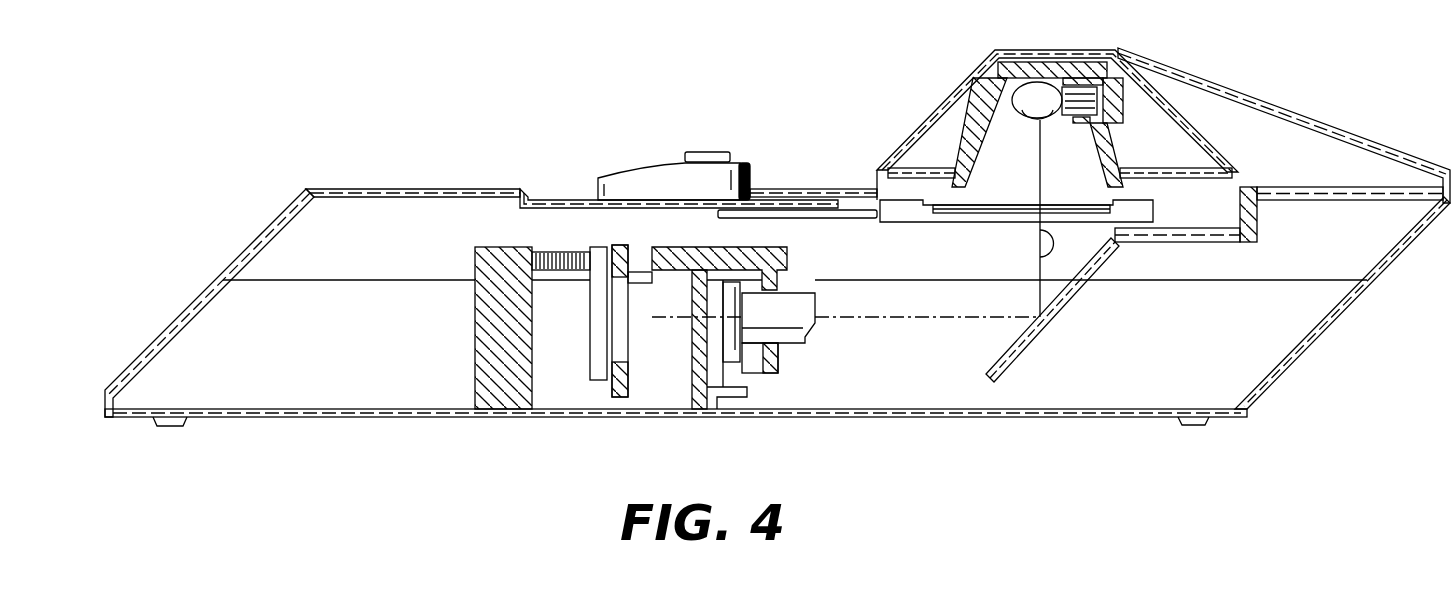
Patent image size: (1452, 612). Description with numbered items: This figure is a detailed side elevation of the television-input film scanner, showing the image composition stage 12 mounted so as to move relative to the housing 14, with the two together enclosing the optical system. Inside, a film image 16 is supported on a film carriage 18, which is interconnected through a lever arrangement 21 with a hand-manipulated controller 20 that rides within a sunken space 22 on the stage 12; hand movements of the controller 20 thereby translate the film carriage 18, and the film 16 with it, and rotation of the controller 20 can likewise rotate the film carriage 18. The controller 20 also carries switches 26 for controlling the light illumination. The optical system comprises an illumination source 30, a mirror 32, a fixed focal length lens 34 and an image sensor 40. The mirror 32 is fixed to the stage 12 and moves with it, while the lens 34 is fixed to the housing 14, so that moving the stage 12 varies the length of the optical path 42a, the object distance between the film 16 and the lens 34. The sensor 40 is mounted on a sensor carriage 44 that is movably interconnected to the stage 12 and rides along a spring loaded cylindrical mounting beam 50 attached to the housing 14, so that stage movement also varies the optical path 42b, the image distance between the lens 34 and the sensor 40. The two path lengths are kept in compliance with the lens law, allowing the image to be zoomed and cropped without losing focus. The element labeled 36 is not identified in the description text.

The image composition stage 12 is at (412, 188).
The housing 14 is at (183, 316).
The film image 16 is at (1057, 203).
The film carriage 18 is at (1155, 210).
The hand-manipulated controller 20 is at (640, 165).
The lever arrangement 21 is at (812, 226).
The sunken space 22 is at (555, 188).
The switches 26 is at (712, 152).
The illumination source 30 is at (1022, 118).
The mirror 32 is at (1000, 352).
The fixed focal length lens 34 is at (795, 333).
The support block 36 is at (750, 377).
The image sensor 40 is at (587, 315).
The optical path 42a is at (1033, 258).
The optical path 42b is at (655, 303).
The sensor carriage 44 is at (623, 247).
The spring loaded cylindrical mounting beam 50 is at (643, 252).